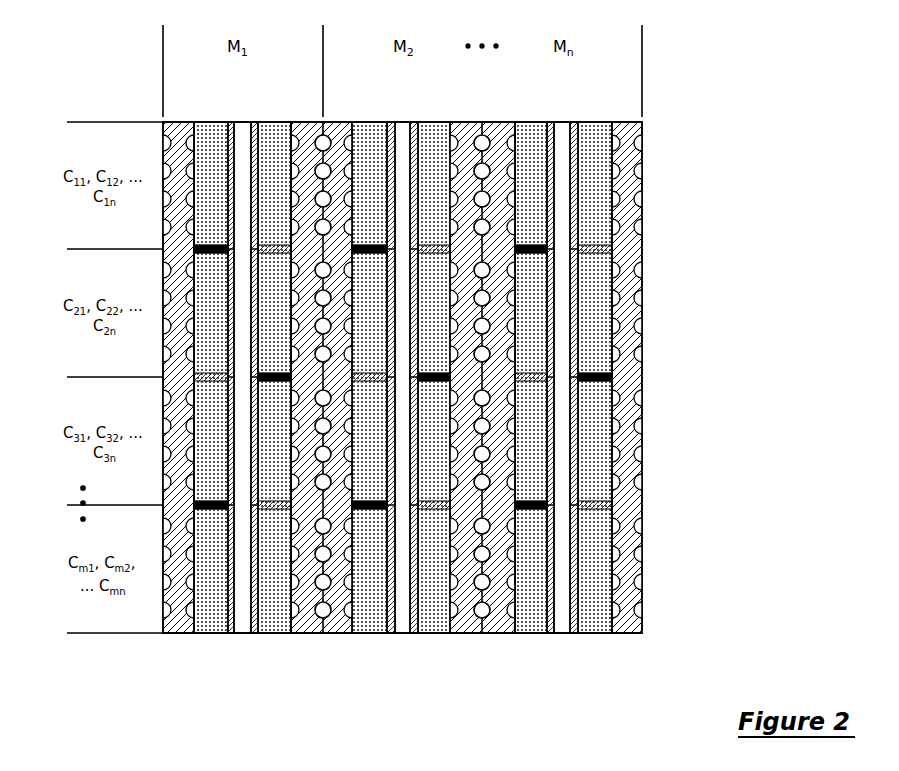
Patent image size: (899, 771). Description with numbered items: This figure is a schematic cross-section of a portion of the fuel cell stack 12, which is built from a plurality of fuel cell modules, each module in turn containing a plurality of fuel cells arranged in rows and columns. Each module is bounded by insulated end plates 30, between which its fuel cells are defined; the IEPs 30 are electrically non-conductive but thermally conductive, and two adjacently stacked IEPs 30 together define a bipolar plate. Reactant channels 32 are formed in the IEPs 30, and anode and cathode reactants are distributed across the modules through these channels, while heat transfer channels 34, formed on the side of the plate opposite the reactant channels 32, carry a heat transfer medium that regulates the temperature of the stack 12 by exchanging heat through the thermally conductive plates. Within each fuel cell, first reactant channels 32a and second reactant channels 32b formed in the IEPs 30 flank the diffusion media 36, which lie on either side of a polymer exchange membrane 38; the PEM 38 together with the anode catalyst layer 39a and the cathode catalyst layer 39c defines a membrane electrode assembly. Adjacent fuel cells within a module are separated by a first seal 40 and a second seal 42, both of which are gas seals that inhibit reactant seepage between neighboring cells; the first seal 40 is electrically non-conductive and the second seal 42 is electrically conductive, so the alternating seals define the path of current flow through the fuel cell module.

The fuel cell stack 12 is at (686, 100).
The insulated end plate 30 is at (170, 633).
The reactant channel 32 is at (192, 140).
The first reactant channel 32a is at (193, 197).
The second reactant channel 32b is at (293, 193).
The heat transfer channel 34 is at (323, 140).
The diffusion media 36 is at (207, 633).
The polymer exchange membrane 38 is at (242, 633).
The anode catalyst layer 39a is at (392, 122).
The cathode catalyst layer 39c is at (415, 122).
The first seal 40 is at (597, 381).
The second seal 42 is at (528, 381).